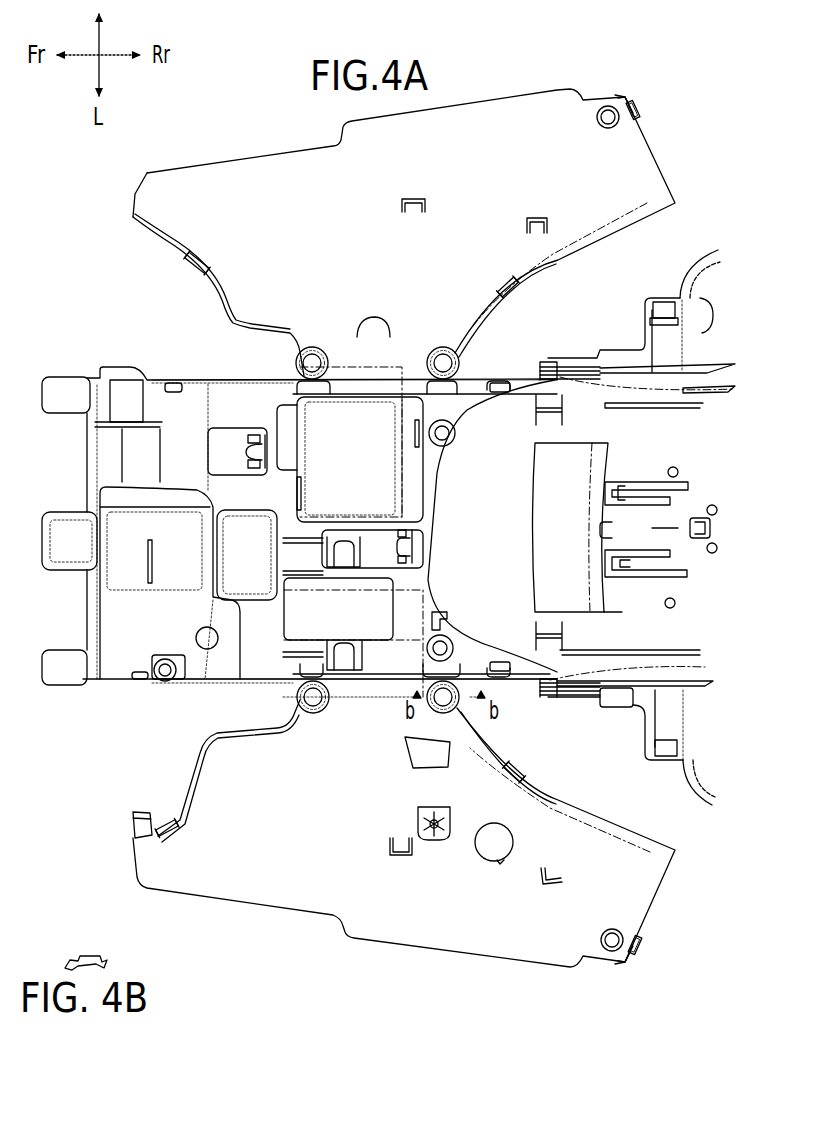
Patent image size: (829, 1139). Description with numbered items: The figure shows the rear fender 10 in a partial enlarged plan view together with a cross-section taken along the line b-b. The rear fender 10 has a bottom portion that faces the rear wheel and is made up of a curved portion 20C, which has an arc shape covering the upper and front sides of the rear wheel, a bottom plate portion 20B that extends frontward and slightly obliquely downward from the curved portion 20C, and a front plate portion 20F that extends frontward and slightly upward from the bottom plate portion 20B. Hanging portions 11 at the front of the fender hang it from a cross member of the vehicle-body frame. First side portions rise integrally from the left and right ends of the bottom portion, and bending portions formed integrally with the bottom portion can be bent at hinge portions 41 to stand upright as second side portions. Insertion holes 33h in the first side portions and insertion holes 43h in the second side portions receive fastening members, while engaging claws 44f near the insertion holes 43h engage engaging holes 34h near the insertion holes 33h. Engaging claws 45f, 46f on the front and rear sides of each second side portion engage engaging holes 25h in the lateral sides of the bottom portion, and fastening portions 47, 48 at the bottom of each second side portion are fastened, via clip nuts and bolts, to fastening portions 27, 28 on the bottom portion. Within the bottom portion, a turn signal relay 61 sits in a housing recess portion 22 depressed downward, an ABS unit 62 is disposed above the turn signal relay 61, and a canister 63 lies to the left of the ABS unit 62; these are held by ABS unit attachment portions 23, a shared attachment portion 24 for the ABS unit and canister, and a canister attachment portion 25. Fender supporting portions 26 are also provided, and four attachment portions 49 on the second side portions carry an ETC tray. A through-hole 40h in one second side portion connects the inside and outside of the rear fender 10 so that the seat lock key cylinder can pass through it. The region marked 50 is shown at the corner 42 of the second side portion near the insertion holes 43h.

In FIG. 4A, the rear fender 10 is at (503, 62).
In FIG. 4A, the hanging portions 11 is at (58, 354).
In FIG. 4A, the front plate portion 20F is at (100, 702).
In FIG. 4A, the bottom plate portion 20B is at (478, 393).
In FIG. 4A, the curved portion 20C is at (522, 491).
In FIG. 4A, the housing recess portion 22 is at (420, 463).
In FIG. 4A, the ABS unit attachment portions 23 is at (245, 445).
In FIG. 4A, the attachment portion for the ABS unit and the canister 24 is at (345, 540).
In FIG. 4B, the canister attachment portion 25 is at (355, 680).
In FIG. 4A, the engaging holes 25h is at (170, 380).
In FIG. 4A, the fender supporting portions 26 is at (447, 433).
In FIG. 4A, the fastening portions 27 is at (317, 386).
In FIG. 4A, the fastening portions 28 is at (423, 398).
In FIG. 4A, the insertion holes 33h is at (555, 374).
In FIG. 4B, the insertion holes 33h is at (543, 690).
In FIG. 4A, the engaging holes 34h is at (580, 372).
In FIG. 4B, the engaging holes 34h is at (583, 697).
In FIG. 4B, the through-hole 40h is at (487, 846).
In FIG. 4A, the hinge portions 41 is at (352, 378).
In FIG. 4B, the hinge portions 41 is at (342, 696).
In FIG. 4A, the corner portion 42 is at (629, 96).
In FIG. 4B, the corner portion 42 is at (626, 963).
In FIG. 4A, the insertion holes 43h is at (606, 107).
In FIG. 4B, the insertion holes 43h is at (612, 943).
In FIG. 4A, the engaging claws 44f is at (641, 107).
In FIG. 4B, the engaging claws 44f is at (642, 944).
In FIG. 4A, the engaging claws 45f is at (195, 262).
In FIG. 4B, the engaging claws 45f is at (165, 824).
In FIG. 4A, the engaging claws 46f is at (506, 285).
In FIG. 4B, the engaging claws 46f is at (514, 767).
In FIG. 4A, the fastening portions 47 is at (305, 347).
In FIG. 4B, the fastening portions 47 is at (312, 713).
In FIG. 4A, the fastening portions 48 is at (448, 347).
In FIG. 4B, the fastening portions 48 is at (450, 708).
In FIG. 4A, the attachment portions 49 is at (407, 197).
In FIG. 4B, the attachment portions 49 is at (400, 857).
In FIG. 4A, the fastening portion 50 is at (623, 82).
In FIG. 4B, the fastening portion 50 is at (541, 708).
In FIG. 4A, the turn signal relay 61 is at (411, 485).
In FIG. 4A, the ABS unit 62 is at (389, 366).
In FIG. 4A, the canister 63 is at (441, 580).